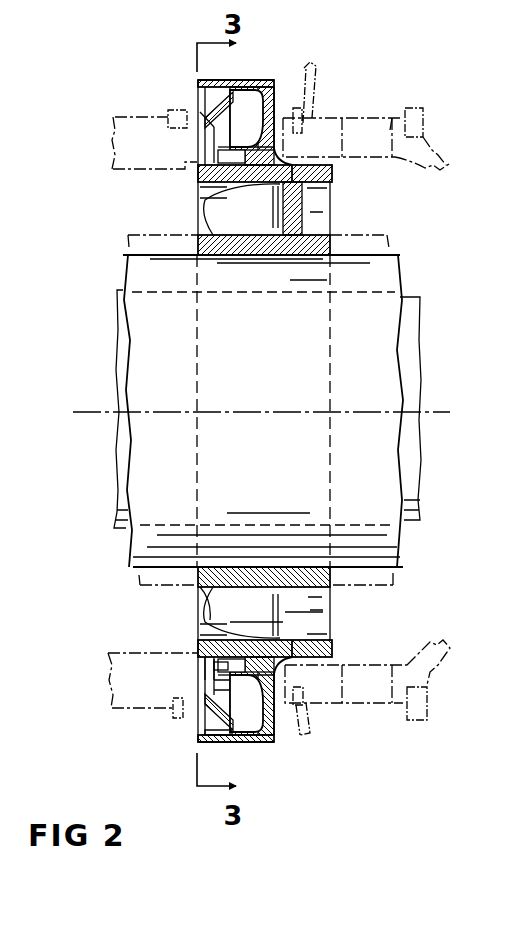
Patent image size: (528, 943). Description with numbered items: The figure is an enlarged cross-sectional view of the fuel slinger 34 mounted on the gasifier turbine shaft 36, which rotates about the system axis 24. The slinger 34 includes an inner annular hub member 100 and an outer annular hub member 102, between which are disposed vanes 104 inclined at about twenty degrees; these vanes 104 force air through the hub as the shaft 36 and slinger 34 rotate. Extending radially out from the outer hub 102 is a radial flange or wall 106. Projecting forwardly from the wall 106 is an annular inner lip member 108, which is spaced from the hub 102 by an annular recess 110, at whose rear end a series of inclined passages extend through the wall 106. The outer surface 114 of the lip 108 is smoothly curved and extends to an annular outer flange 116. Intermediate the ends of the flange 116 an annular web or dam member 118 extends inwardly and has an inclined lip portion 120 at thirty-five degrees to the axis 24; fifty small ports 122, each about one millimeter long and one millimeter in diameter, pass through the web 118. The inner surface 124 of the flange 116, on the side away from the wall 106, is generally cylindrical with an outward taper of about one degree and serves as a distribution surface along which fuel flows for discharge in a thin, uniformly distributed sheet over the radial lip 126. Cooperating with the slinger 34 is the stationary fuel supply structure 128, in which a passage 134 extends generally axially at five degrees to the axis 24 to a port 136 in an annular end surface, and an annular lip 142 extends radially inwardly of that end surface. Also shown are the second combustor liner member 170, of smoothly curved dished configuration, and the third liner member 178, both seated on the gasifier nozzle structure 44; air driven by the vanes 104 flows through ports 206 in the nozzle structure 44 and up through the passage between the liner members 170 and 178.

The system axis 24 is at (115, 412).
The fuel slinger 34 is at (277, 71).
The gasifier turbine shaft 36 is at (402, 339).
The gasifier nozzle structure 44 is at (437, 151).
The inner annular hub member 100 is at (207, 200).
The outer annular hub member 102 is at (331, 176).
The vanes 104 is at (292, 208).
The radial flange or wall 106 is at (277, 727).
The annular inner lip member 108 is at (214, 666).
The annular recess 110 is at (200, 657).
The outer surface of lip 114 is at (217, 693).
The annular outer flange 116 is at (227, 742).
The annular web or dam member 118 is at (202, 721).
The inclined lip portion 120 is at (200, 112).
The ports 122 is at (241, 87).
The inner surface of annular flange 124 is at (201, 733).
The radial lip 126 is at (199, 88).
The stationary fuel supply structure 128 is at (106, 155).
The passage 134 is at (172, 111).
The port 136 is at (215, 125).
The annular lip 142 is at (226, 165).
The second combustor liner member 170 is at (320, 80).
The third liner member 178 is at (428, 108).
The ports 206 is at (390, 130).